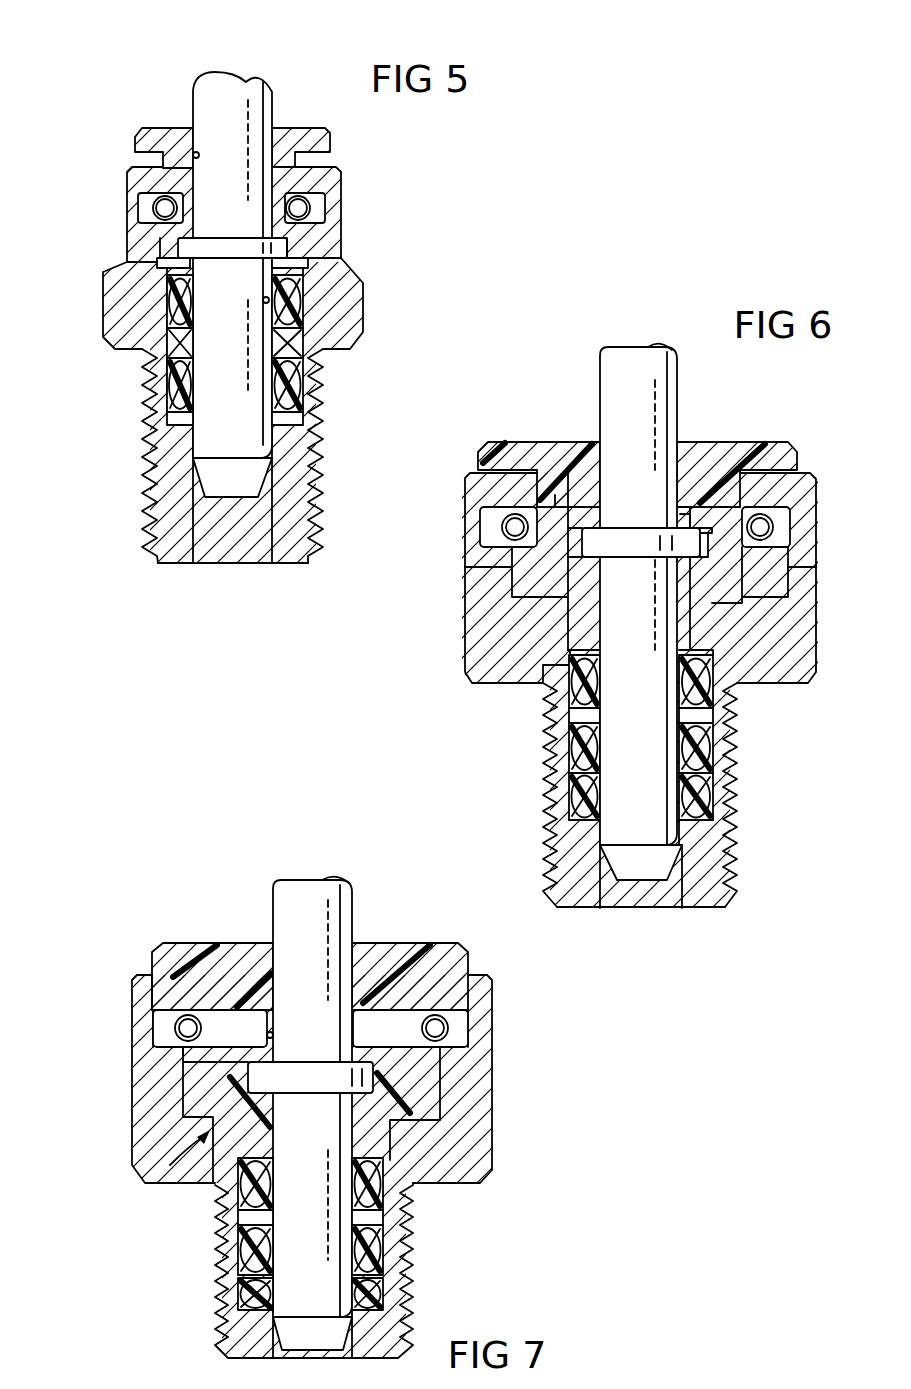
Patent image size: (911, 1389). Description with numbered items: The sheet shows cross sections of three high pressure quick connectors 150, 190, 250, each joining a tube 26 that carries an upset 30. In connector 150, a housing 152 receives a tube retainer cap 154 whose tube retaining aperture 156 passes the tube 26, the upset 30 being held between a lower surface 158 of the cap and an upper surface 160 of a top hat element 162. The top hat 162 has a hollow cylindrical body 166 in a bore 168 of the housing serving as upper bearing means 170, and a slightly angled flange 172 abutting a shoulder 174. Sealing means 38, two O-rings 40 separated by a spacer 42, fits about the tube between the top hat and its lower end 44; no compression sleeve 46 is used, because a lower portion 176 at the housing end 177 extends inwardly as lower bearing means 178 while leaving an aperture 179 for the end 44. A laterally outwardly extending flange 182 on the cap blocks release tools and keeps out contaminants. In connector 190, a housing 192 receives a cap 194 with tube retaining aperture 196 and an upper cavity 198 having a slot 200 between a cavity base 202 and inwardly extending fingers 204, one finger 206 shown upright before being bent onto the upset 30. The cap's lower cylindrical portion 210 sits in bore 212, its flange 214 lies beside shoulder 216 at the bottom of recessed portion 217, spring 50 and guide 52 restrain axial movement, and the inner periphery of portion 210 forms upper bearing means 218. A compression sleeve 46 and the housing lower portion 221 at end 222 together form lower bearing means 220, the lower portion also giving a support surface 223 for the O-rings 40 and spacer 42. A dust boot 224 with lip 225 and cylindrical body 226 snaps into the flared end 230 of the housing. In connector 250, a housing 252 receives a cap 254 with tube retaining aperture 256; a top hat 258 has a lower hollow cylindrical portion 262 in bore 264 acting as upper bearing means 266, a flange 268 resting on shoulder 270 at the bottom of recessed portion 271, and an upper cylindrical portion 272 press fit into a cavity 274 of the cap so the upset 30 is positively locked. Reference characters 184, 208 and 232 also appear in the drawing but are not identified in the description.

In FIG. 5, the tube 26 is at (217, 130).
In FIG. 6, the tube 26 is at (618, 429).
In FIG. 7, the tube 26 is at (290, 989).
In FIG. 5, the upset 30 is at (200, 243).
In FIG. 6, the upset 30 is at (645, 543).
In FIG. 7, the upset 30 is at (250, 1077).
In FIG. 5, the sealing means 38 is at (165, 395).
In FIG. 6, the sealing means 38 is at (732, 713).
In FIG. 5, the O-rings 40 is at (170, 430).
In FIG. 5, the spacer 42 is at (170, 405).
In FIG. 5, the lower end of tube 44 is at (200, 497).
In FIG. 6, the compression sleeve 46 is at (720, 790).
In FIG. 6, the spring 50 is at (495, 520).
In FIG. 7, the spring 50 is at (170, 1020).
In FIG. 6, the guide 52 is at (500, 540).
In FIG. 5, the high pressure quick connector 150 is at (115, 121).
In FIG. 5, the housing 152 is at (92, 338).
In FIG. 5, the tube retainer cap 154 is at (141, 101).
In FIG. 5, the tube retaining aperture 156 is at (193, 156).
In FIG. 5, the lower surface 158 is at (150, 205).
In FIG. 5, the upper surface 160 is at (289, 247).
In FIG. 5, the top hat element 162 is at (148, 302).
In FIG. 5, the hollow cylindrical body 166 is at (270, 300).
In FIG. 5, the bore 168 is at (157, 380).
In FIG. 5, the upper bearing means 170 is at (303, 330).
In FIG. 5, the flange 172 is at (165, 262).
In FIG. 5, the shoulder 174 is at (298, 268).
In FIG. 5, the lower portion 176 is at (310, 490).
In FIG. 5, the end 177 is at (295, 565).
In FIG. 5, the lower bearing means 178 is at (190, 470).
In FIG. 5, the aperture 179 is at (262, 535).
In FIG. 5, the laterally outwardly extending flange 182 is at (329, 140).
In FIG. 5, the mounting flange 184 is at (165, 128).
In FIG. 6, the high pressure quick connector 190 is at (474, 437).
In FIG. 6, the housing 192 is at (450, 608).
In FIG. 6, the tube retainer cap 194 is at (700, 575).
In FIG. 6, the tube retaining aperture 196 is at (705, 650).
In FIG. 6, the upper cavity 198 is at (545, 560).
In FIG. 6, the slot 200 is at (712, 547).
In FIG. 6, the cavity base 202 is at (715, 590).
In FIG. 6, the fingers 204 is at (683, 510).
In FIG. 6, the finger 206 is at (558, 508).
In FIG. 6, the hub 208 is at (580, 548).
In FIG. 6, the lower cylindrical portion 210 is at (566, 665).
In FIG. 6, the bore 212 is at (582, 706).
In FIG. 6, the flange 214 is at (595, 620).
In FIG. 6, the shoulder 216 is at (575, 640).
In FIG. 6, the recessed portion 217 is at (780, 594).
In FIG. 6, the upper bearing means 218 is at (592, 668).
In FIG. 6, the lower bearing means 220 is at (600, 830).
In FIG. 6, the lower portion 221 is at (745, 860).
In FIG. 6, the end 222 is at (690, 908).
In FIG. 6, the support surface 223 is at (718, 805).
In FIG. 6, the dust boot 224 is at (518, 434).
In FIG. 6, the lip 225 is at (495, 452).
In FIG. 6, the cylindrical body 226 is at (755, 498).
In FIG. 6, the flared end 230 is at (470, 490).
In FIG. 6, the plate notch 232 is at (566, 490).
In FIG. 7, the high pressure quick connector 250 is at (167, 928).
In FIG. 7, the housing 252 is at (115, 1118).
In FIG. 7, the tube retainer cap 254 is at (447, 1090).
In FIG. 7, the tube retaining aperture 256 is at (265, 1033).
In FIG. 7, the top hat 258 is at (170, 1192).
In FIG. 7, the lower hollow cylindrical portion 262 is at (365, 1158).
In FIG. 7, the bore 264 is at (233, 1187).
In FIG. 7, the upper bearing means 266 is at (383, 1152).
In FIG. 7, the flange 268 is at (150, 1138).
In FIG. 7, the shoulder 270 is at (395, 1118).
In FIG. 7, the recessed portion 271 is at (140, 1160).
In FIG. 7, the upper cylindrical portion 272 is at (245, 1065).
In FIG. 7, the cavity 274 is at (400, 1090).